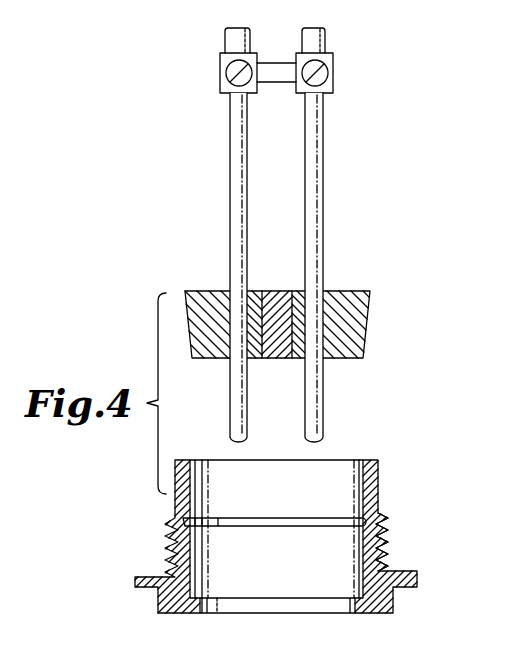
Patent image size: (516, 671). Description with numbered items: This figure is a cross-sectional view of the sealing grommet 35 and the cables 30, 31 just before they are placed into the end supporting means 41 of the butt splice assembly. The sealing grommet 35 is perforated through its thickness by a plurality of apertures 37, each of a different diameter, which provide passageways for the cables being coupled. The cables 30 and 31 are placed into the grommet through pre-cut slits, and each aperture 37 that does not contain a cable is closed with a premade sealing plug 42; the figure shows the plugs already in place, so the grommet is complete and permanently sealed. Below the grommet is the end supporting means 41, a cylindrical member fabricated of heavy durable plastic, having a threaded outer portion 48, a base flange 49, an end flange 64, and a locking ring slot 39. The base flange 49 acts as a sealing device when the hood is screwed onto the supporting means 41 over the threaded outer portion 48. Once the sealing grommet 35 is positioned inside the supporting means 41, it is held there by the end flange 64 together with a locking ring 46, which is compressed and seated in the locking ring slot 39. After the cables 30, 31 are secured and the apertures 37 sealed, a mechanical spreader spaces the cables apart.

The cable 30 is at (232, 133).
The cable 31 is at (316, 146).
The sealing grommet 35 is at (370, 299).
The aperture 37 is at (281, 349).
The locking ring slot 39 is at (357, 520).
The end supporting means 41 is at (148, 543).
The sealing plug 42 is at (284, 290).
The locking ring 46 is at (507, 438).
The threaded outer portion 48 is at (383, 540).
The base flange 49 is at (407, 569).
The end flange 64 is at (352, 594).